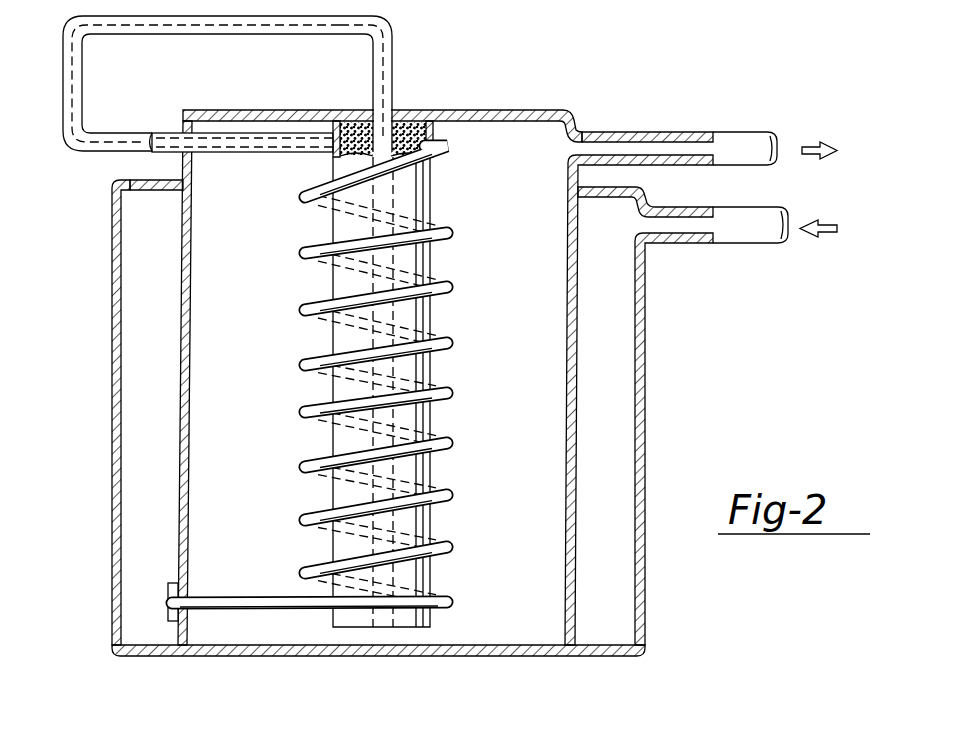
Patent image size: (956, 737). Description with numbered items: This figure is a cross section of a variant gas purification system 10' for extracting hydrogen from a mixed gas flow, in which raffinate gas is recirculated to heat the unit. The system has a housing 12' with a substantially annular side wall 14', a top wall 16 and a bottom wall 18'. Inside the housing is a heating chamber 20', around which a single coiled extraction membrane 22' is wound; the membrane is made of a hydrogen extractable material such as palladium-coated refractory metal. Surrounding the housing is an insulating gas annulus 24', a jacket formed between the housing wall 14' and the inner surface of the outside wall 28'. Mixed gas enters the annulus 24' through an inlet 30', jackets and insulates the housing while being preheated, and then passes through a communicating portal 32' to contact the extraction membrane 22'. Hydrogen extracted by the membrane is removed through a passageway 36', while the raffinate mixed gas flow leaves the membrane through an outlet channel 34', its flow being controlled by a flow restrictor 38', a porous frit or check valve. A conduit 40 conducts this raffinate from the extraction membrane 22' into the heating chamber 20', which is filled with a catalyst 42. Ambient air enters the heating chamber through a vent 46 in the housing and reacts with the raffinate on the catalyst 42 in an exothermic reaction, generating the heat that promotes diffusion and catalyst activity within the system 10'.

The gas purification system 10' is at (722, 439).
The housing 12' is at (111, 383).
The side wall 14' is at (370, 400).
The top wall 16 is at (574, 124).
The bottom wall 18' is at (412, 653).
The heating chamber 20' is at (426, 392).
The coiled membrane 22' is at (413, 375).
The insulating gas annulus 24' is at (109, 294).
The outside wall 28' is at (80, 412).
The inlet 30' is at (707, 241).
The communicating portal 32' is at (307, 573).
The outlet channel 34' is at (201, 83).
The passageway 36' is at (769, 123).
The flow restrictor 38' is at (242, 111).
The conduit 40 is at (391, 38).
The catalyst 42 is at (489, 125).
The vent 46 is at (410, 110).